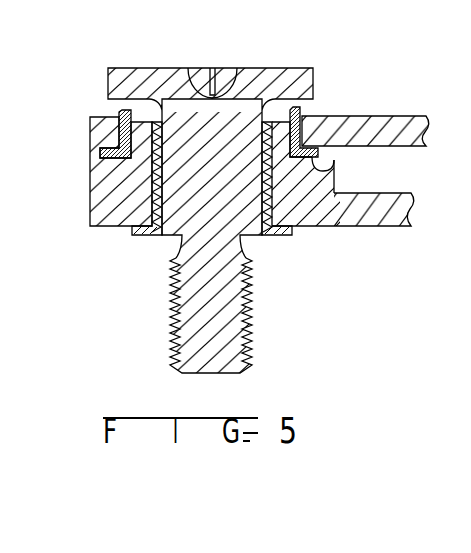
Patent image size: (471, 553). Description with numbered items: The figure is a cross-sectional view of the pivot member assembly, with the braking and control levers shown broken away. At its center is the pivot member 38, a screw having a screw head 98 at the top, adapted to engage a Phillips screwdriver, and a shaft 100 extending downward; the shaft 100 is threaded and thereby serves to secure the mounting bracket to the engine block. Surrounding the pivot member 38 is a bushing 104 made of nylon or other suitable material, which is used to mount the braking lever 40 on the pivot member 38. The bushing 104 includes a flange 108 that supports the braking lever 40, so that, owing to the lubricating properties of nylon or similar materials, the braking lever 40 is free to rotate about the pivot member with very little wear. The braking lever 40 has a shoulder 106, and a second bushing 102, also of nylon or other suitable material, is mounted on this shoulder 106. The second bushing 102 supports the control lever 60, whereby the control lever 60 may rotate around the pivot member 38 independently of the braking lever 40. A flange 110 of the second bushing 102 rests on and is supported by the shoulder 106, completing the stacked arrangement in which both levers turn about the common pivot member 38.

The pivot member 38 is at (224, 193).
The screw head 98 is at (140, 68).
The shaft 100 is at (248, 297).
The second bushing 102 is at (301, 109).
The bushing 104 is at (96, 174).
The shoulder 106 is at (336, 169).
The flange 108 is at (147, 237).
The flange 110 is at (100, 151).
The control lever 60 is at (397, 116).
The braking lever 40 is at (378, 223).